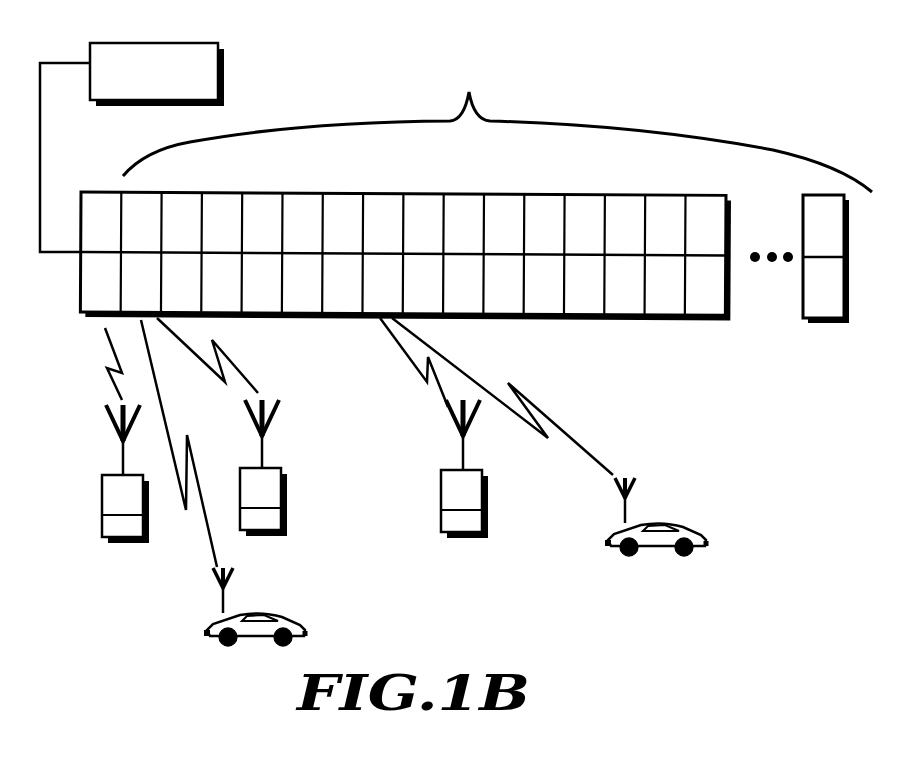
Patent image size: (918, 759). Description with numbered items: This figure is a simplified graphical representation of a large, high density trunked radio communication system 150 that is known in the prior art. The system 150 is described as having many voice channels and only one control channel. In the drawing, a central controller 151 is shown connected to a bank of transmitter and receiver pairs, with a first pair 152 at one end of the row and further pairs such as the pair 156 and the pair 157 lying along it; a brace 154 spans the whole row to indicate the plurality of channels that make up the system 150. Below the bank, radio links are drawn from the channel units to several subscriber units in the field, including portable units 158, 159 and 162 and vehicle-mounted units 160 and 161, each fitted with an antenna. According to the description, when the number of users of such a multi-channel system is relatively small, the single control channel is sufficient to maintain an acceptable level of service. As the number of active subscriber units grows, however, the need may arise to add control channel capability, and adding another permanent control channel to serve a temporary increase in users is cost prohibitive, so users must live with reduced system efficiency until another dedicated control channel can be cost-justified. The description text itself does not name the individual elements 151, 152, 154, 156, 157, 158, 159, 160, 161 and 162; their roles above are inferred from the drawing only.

The system 150 is at (795, 89).
The central controller 151 is at (222, 53).
The transceiver array 152 is at (110, 190).
The plurality of transmitter/receiver pairs 154 is at (470, 96).
The transmitter/receiver pair 156 is at (158, 192).
The transmitter/receiver pair 157 is at (387, 192).
The portable receiver unit 158 is at (132, 537).
The portable receiver unit 159 is at (460, 532).
The vehicle 160 is at (272, 618).
The vehicle 161 is at (672, 532).
The portable receiver unit 162 is at (288, 520).